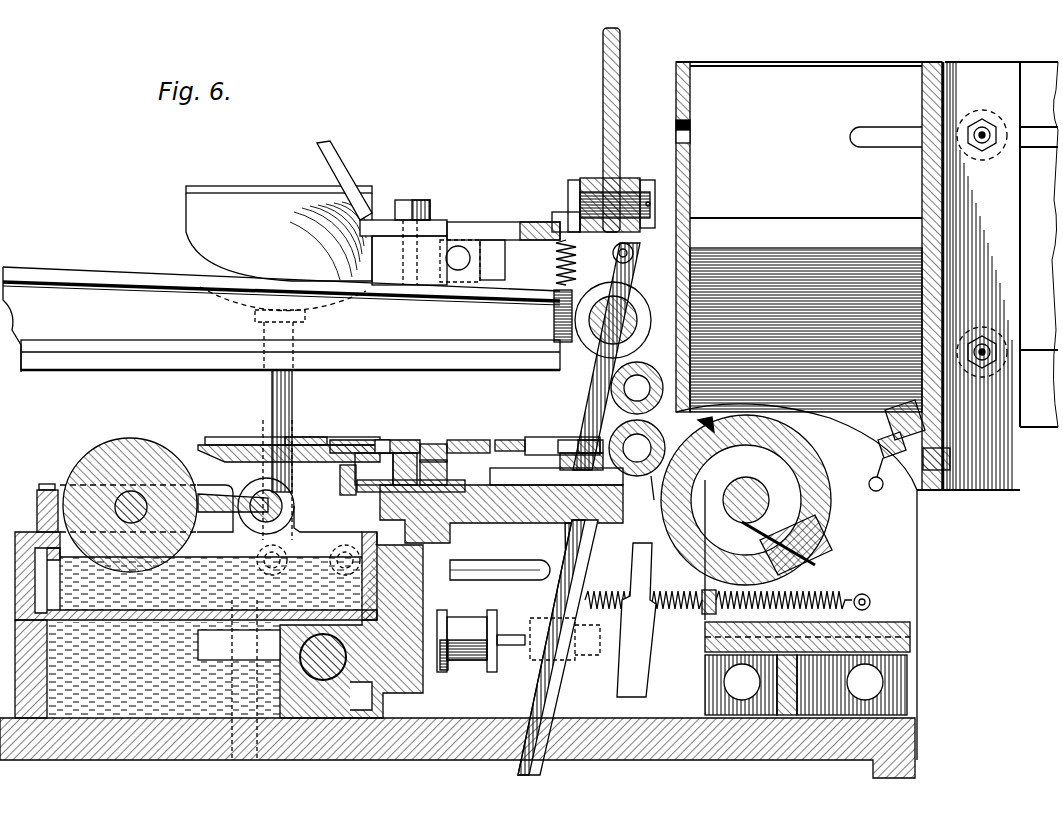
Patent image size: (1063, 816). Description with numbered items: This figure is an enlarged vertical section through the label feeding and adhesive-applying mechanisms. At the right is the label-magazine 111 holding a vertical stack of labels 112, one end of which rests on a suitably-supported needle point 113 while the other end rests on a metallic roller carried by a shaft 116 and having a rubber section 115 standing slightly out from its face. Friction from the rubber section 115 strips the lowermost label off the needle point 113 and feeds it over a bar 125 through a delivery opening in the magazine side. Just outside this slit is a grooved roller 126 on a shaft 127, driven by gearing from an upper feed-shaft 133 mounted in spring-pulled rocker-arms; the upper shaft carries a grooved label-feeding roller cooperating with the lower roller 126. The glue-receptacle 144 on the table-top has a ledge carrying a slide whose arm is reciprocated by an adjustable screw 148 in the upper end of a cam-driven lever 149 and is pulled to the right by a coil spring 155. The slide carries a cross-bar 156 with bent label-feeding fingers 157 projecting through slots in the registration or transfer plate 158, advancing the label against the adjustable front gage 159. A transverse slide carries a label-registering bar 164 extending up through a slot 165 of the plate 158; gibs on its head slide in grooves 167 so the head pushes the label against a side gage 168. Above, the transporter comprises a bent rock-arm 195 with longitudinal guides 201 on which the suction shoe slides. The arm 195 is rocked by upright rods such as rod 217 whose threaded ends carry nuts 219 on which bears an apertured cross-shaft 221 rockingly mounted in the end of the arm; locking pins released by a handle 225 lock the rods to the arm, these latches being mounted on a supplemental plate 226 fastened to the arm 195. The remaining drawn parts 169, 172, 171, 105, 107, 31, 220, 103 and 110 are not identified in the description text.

The bent rock-arm 195 is at (82, 260).
The longitudinal guides 201 is at (150, 348).
The wheel 169 is at (120, 458).
The bearing 172 is at (246, 480).
The bracket 171 is at (66, 470).
The glue-receptacle 144 is at (348, 562).
The adjustable front gage 159 is at (322, 437).
The grooves 167 is at (372, 440).
The side gage 168 is at (405, 440).
The label-registering bar 164 is at (430, 444).
The registration or transfer plate 158 is at (465, 440).
The label-feeding fingers 157 is at (570, 440).
The slot 165 is at (447, 472).
The cross-bar 156 is at (560, 463).
The frame block 105 is at (493, 506).
The rod 107 is at (572, 560).
The grooved roller 126 is at (582, 540).
The shaft 127 is at (654, 500).
The adjustable screw 148 is at (630, 594).
The lever 149 is at (642, 662).
The upstanding rod 217 is at (553, 698).
The base 31 is at (608, 740).
The supplemental plate 226 is at (500, 230).
The post 220 is at (603, 112).
The handle 225 is at (630, 178).
The apertured cross-shaft 221 is at (626, 304).
The upper feed-shaft 133 is at (643, 374).
The nuts 219 is at (600, 378).
The roller 103 is at (612, 432).
The label-magazine 111 is at (820, 62).
The labels 112 is at (818, 275).
The wheel 110 is at (808, 460).
The bar 125 is at (706, 430).
The shaft 116 is at (750, 490).
The rubber section 115 is at (826, 550).
The coil spring 155 is at (842, 596).
The needle point 113 is at (905, 412).